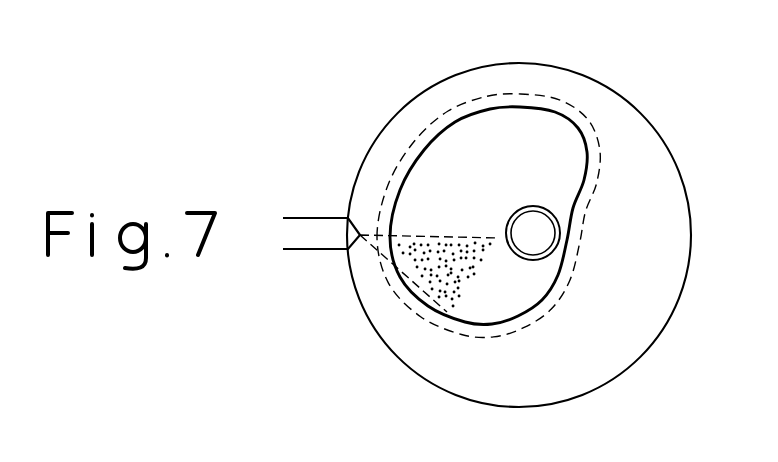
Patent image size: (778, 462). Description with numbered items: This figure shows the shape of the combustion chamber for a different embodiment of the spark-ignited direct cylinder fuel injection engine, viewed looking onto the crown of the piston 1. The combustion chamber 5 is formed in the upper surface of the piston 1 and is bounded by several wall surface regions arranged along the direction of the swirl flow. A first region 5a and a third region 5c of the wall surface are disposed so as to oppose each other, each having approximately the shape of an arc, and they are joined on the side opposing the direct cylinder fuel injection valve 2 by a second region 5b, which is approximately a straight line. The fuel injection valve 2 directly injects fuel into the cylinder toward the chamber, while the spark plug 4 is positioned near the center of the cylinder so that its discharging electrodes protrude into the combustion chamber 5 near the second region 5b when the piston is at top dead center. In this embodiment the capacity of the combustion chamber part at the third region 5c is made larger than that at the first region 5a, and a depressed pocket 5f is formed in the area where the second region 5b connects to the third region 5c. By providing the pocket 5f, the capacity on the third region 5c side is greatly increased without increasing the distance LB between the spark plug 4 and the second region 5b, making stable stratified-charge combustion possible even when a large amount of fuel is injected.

The piston 1 is at (648, 290).
The direct cylinder fuel injection valve 2 is at (297, 215).
The spark plug 4 is at (540, 260).
The combustion chamber 5 is at (433, 172).
The first region of the wall surface 5a is at (460, 336).
The second region of the wall surface 5b is at (580, 237).
The third region of the wall surface 5c is at (465, 103).
The pocket 5f is at (600, 157).
The distance between the spark plug and the second wall surface region LB is at (581, 195).